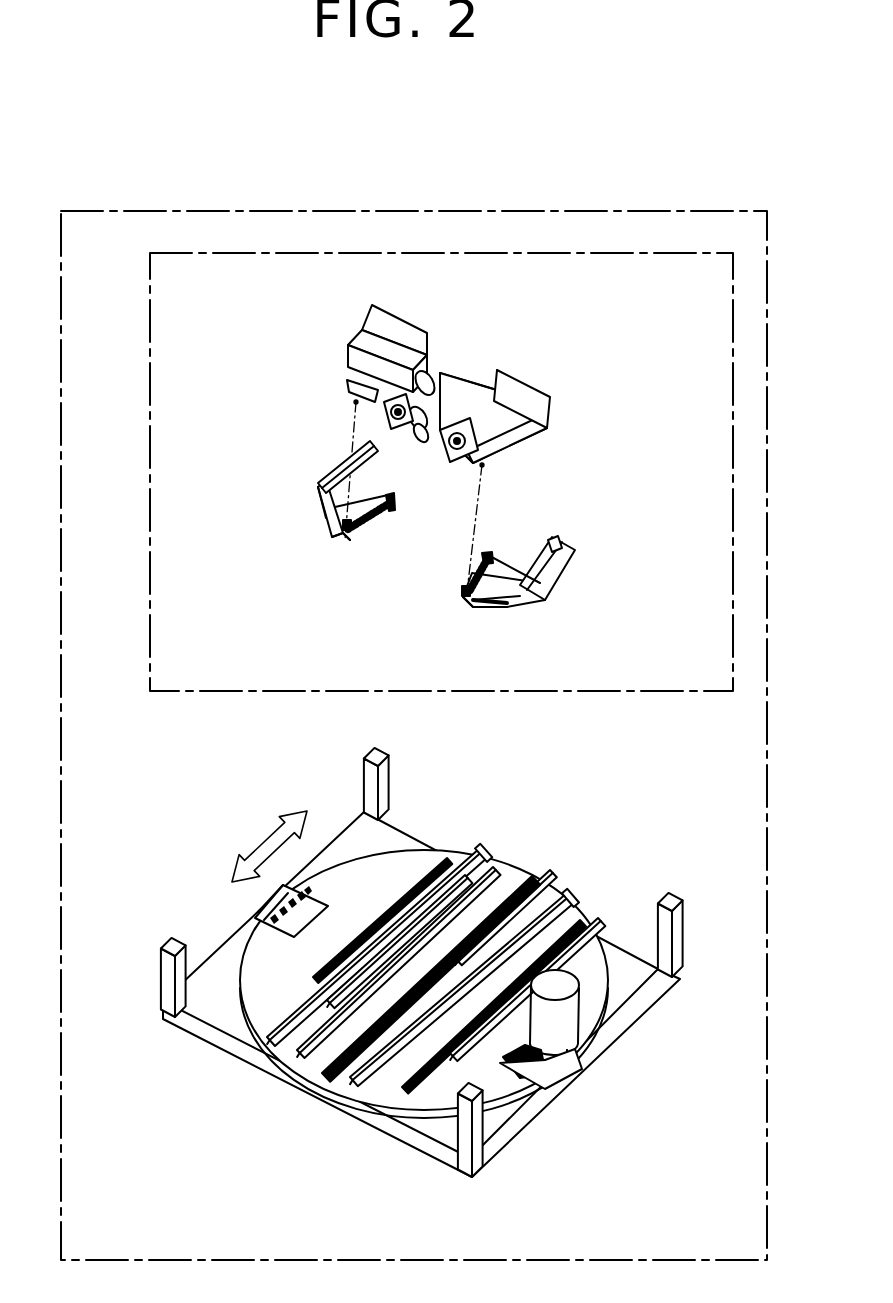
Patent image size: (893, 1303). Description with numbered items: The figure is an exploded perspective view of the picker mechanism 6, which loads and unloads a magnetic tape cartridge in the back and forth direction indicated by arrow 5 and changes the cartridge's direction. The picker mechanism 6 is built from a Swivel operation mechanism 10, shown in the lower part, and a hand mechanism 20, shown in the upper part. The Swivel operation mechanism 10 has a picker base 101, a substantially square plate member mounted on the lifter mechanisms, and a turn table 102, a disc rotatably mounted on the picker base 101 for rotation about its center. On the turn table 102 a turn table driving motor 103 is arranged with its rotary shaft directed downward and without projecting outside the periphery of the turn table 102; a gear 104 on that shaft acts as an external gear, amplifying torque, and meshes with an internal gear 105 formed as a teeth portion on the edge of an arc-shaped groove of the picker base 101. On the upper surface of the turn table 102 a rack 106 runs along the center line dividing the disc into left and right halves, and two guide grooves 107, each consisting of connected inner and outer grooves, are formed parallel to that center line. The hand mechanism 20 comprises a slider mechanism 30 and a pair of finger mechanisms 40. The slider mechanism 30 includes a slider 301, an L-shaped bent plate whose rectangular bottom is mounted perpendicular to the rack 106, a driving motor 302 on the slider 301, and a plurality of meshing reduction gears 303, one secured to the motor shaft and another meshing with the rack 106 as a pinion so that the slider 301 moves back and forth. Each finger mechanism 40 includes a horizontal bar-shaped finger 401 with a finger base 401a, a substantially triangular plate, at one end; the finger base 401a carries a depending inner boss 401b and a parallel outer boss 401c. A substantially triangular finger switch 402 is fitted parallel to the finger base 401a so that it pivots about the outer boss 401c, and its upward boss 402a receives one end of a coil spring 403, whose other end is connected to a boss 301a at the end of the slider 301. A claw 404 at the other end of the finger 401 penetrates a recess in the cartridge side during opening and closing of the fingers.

The picker mechanism 6 is at (417, 211).
The hand mechanism 20 is at (150, 375).
The slider mechanism 30 is at (530, 378).
The slider 301 is at (512, 443).
The boss 301a is at (356, 402).
The driving motor 302 is at (350, 348).
The reduction gears 303 is at (457, 380).
The finger mechanism 40 is at (316, 500).
The finger 401 is at (323, 445).
The finger base 401a is at (328, 526).
The inner boss 401b is at (343, 540).
The outer boss 401c is at (352, 545).
The finger switch 402 is at (375, 522).
The boss 402a is at (396, 500).
The coil spring 403 is at (350, 520).
The claw 404 is at (563, 545).
The arrow 5 is at (262, 840).
The Swivel operation mechanism 10 is at (385, 1132).
The picker base 101 is at (497, 1118).
The turn table 102 is at (252, 995).
The turn table driving motor 103 is at (580, 1007).
The gear 104 is at (555, 1082).
The internal gear 105 is at (262, 897).
The rack 106 is at (325, 1080).
The guide grooves 107 is at (436, 856).